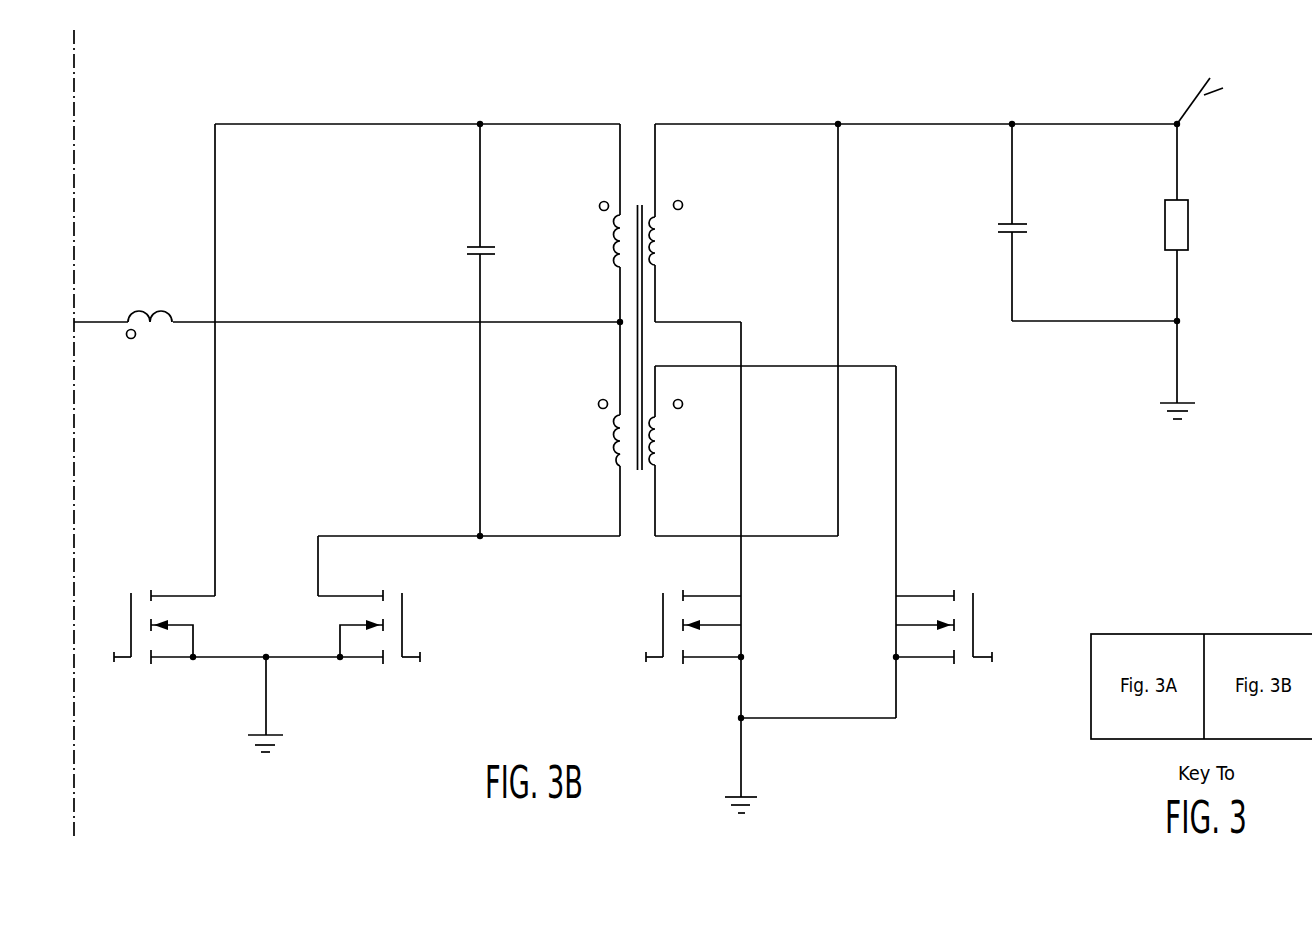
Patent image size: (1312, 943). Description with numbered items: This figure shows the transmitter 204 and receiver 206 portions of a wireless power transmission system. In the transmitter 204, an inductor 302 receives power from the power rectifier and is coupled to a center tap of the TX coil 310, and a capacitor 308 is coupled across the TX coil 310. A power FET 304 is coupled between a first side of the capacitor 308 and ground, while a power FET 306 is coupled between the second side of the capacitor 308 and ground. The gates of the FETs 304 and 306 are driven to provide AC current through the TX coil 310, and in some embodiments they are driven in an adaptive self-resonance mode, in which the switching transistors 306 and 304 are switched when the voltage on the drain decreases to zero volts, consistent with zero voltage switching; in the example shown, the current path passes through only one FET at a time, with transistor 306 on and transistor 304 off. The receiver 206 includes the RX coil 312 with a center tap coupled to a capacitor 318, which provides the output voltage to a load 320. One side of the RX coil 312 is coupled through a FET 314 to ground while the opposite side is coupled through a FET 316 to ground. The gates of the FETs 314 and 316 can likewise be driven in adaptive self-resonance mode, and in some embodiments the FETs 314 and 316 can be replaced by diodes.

The transmitter 204 is at (380, 435).
The receiver 206 is at (941, 268).
The inductor L1 302 is at (150, 301).
The power FET 304 is at (138, 663).
The power FET 306 is at (396, 663).
The capacitor 308 is at (462, 252).
The TX coil 310 is at (607, 270).
The RX coil 312 is at (665, 268).
The FET 314 is at (671, 663).
The FET 316 is at (964, 663).
The capacitor 318 is at (1030, 229).
The load 320 is at (1164, 234).